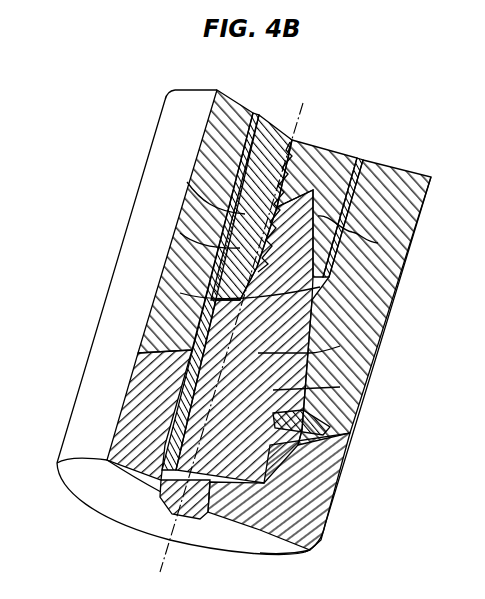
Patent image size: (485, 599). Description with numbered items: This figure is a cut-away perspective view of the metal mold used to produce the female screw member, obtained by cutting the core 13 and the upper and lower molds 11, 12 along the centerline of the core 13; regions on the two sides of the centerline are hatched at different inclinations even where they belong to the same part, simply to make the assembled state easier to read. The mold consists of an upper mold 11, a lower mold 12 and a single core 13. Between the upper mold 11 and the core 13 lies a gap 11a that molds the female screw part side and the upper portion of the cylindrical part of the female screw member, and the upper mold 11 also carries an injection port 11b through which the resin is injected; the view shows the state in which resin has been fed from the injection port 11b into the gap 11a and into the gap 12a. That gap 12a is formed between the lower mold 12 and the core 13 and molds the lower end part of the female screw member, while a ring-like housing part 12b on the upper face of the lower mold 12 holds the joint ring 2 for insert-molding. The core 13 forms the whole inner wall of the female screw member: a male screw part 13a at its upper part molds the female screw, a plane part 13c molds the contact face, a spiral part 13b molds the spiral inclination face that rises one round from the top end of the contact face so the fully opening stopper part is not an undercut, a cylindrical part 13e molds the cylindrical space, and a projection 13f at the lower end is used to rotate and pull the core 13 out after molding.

The joint ring 2 is at (140, 392).
The upper mold 11 is at (399, 287).
The gap 11a is at (378, 243).
The injection port 11b is at (263, 101).
The lower mold 12 is at (343, 468).
The gap 12a is at (330, 516).
The ring-like housing part 12b is at (350, 432).
The core 13 is at (340, 347).
The male screw part 13a is at (187, 182).
The spiral part 13b is at (180, 233).
The plane part 13c is at (180, 293).
The cylindrical part 13e is at (335, 385).
The projection 13f is at (147, 483).